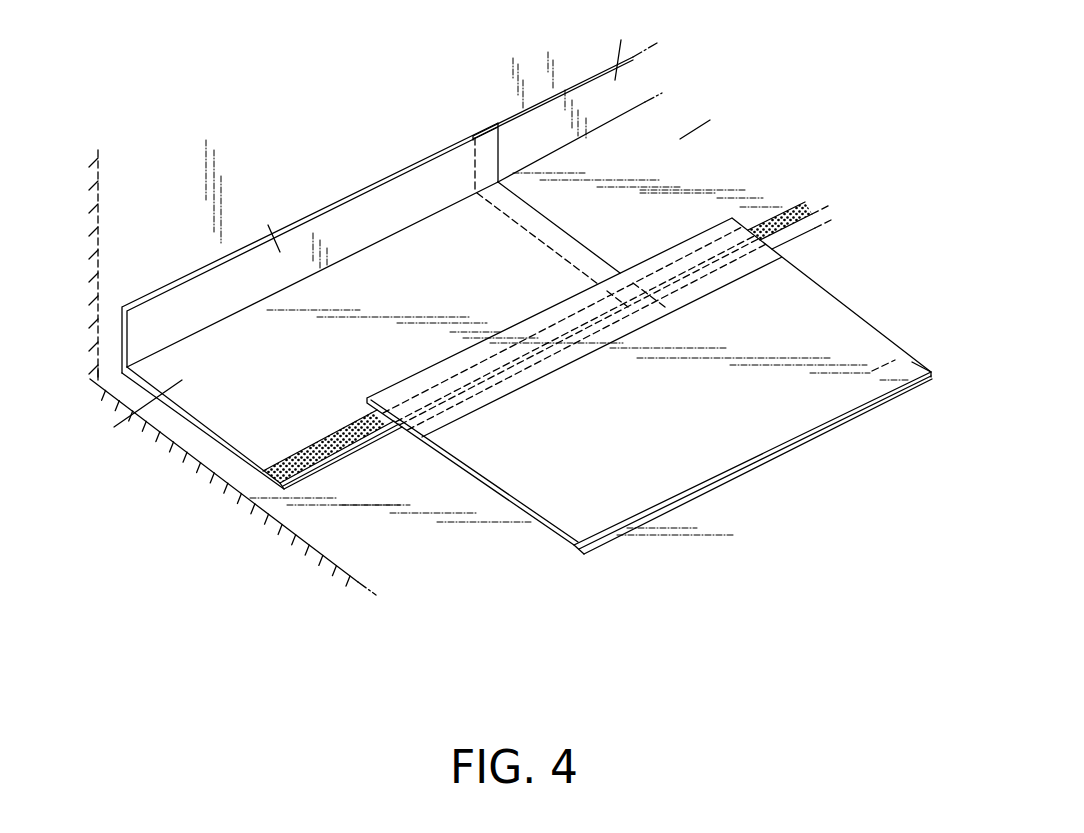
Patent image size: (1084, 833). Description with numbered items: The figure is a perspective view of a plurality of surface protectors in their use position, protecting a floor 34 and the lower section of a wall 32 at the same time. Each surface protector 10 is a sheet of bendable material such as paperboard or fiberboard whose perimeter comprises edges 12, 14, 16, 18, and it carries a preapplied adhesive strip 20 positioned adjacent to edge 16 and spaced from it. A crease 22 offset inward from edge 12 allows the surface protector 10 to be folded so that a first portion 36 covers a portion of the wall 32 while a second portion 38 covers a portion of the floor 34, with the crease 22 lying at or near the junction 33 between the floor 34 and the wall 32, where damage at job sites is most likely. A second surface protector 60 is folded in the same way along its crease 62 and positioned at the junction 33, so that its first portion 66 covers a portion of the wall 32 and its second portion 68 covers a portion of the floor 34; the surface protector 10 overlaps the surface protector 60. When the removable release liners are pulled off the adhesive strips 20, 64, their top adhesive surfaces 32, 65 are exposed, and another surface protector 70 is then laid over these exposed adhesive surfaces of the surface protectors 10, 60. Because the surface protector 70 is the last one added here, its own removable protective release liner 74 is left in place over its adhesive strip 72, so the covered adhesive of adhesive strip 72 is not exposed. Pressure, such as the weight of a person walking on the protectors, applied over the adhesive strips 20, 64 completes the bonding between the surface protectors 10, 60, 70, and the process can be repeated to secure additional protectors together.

The surface protector 10 is at (166, 289).
The edge 12 is at (390, 173).
The edge 14 is at (580, 242).
The edge 16 is at (328, 465).
The edge 18 is at (193, 425).
The adhesive strip 20 is at (363, 422).
The crease 22 is at (357, 254).
The wall 32 is at (142, 188).
The junction 33 is at (100, 372).
The floor 34 is at (382, 562).
The first portion 36 is at (283, 254).
The second portion 38 is at (185, 378).
The surface protector 60 is at (578, 75).
The crease 62 is at (560, 150).
The adhesive strip 64 is at (778, 233).
The top adhesive surface 65 is at (797, 213).
The first portion 66 is at (614, 88).
The second portion 68 is at (675, 142).
The surface protector 70 is at (805, 441).
The adhesive strip 72 is at (856, 402).
The removable protective release liner 74 is at (910, 366).